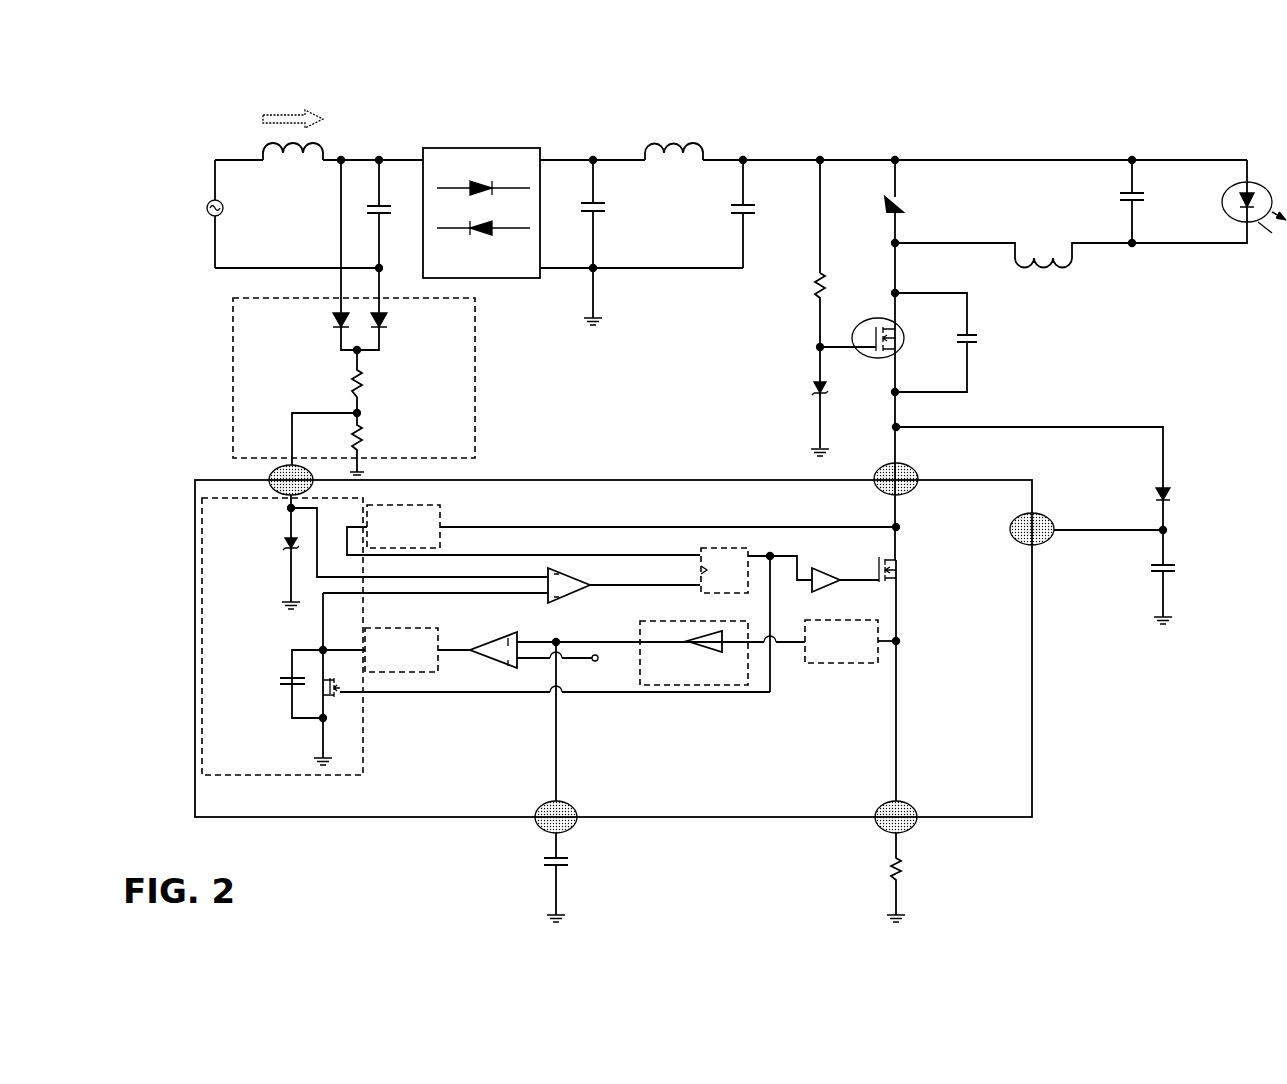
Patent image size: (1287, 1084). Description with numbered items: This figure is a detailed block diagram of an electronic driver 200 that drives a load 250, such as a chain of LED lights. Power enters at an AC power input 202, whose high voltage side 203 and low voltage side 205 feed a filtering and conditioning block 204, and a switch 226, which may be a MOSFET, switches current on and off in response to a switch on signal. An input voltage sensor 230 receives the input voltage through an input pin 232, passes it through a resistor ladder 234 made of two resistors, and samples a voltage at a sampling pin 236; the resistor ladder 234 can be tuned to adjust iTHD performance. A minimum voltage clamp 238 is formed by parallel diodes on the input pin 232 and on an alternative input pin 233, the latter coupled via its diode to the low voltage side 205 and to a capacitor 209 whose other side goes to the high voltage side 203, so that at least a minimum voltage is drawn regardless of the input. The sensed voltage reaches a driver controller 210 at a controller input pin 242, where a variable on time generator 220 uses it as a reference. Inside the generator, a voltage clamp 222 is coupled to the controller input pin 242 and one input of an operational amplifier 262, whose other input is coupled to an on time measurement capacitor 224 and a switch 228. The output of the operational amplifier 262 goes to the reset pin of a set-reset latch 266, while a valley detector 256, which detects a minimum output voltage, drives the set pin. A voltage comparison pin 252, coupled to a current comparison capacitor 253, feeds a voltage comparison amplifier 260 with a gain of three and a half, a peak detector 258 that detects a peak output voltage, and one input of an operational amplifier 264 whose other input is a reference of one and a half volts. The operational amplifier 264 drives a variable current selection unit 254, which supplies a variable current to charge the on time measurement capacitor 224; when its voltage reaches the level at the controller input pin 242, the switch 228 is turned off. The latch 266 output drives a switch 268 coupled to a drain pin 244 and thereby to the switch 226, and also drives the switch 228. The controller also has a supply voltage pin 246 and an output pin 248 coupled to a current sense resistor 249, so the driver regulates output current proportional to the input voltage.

The electronic driver 200 is at (188, 112).
The AC power input 202 is at (287, 205).
The high voltage side 203 is at (364, 159).
The filtering and conditioning block 204 is at (835, 208).
The low voltage side 205 is at (392, 267).
The capacitor 209 is at (387, 201).
The driver controller 210 is at (681, 673).
The variable on time generator 220 is at (293, 782).
The voltage clamp 222 is at (276, 532).
The on time measurement capacitor 224 is at (268, 668).
The switch 226 is at (905, 346).
The switch 228 is at (348, 699).
The input voltage sensor 230 is at (350, 375).
The input pin 232 is at (336, 284).
The alternative input pin 233 is at (386, 288).
The resistor ladder 234 is at (409, 392).
The sampling pin 236 is at (281, 407).
The minimum voltage clamp 238 is at (408, 313).
The controller input pin 242 is at (266, 472).
The drain pin 244 is at (918, 468).
The supply voltage pin 246 is at (1053, 516).
The output pin 248 is at (916, 827).
The current sense resistor 249 is at (906, 873).
The load 250 is at (1260, 178).
The voltage comparison pin 252 is at (578, 825).
The current comparison capacitor 253 is at (576, 872).
The variable current selection unit 254 is at (441, 627).
The valley detector 256 is at (443, 509).
The peak detector 258 is at (843, 666).
The voltage comparison amplifier 260 is at (640, 629).
The operational amplifier 262 is at (588, 578).
The operational amplifier 264 is at (486, 662).
The set-reset latch 266 is at (698, 546).
The switch 268 is at (903, 564).